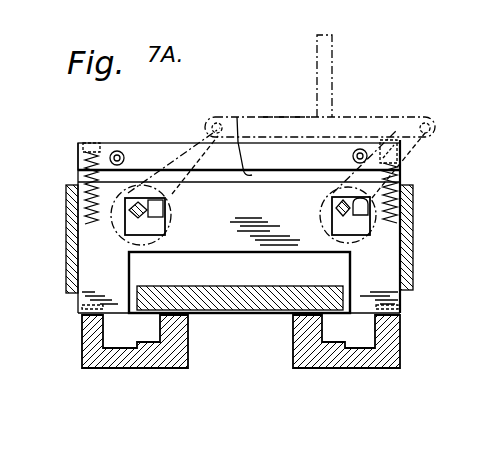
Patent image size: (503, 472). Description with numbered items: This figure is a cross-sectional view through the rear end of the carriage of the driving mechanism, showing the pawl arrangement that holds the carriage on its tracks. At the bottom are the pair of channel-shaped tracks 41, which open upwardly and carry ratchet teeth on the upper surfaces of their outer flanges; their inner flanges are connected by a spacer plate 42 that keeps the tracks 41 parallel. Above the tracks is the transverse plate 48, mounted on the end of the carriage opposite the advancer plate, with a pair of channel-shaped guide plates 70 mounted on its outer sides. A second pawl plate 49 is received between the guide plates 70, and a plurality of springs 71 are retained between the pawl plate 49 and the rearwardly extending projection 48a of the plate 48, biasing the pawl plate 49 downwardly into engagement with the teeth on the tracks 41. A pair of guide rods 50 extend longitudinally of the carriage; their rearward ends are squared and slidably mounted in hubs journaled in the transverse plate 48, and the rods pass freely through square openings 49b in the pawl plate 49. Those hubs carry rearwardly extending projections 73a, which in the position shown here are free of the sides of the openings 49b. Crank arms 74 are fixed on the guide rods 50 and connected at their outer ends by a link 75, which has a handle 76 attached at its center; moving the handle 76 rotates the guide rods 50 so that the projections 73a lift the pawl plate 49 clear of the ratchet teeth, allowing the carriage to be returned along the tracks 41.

The tracks 41 is at (101, 366).
The spacer plate 42 is at (218, 303).
The transverse plate 48 is at (163, 153).
The projection 48a is at (320, 115).
The pawl plate 49 is at (238, 243).
The openings 49b is at (165, 229).
The guide rods 50 is at (120, 218).
The guide plates 70 is at (67, 243).
The springs 71 is at (80, 173).
The projections 73a is at (165, 206).
The crank arms 74 is at (196, 138).
The link 75 is at (283, 122).
The handle 76 is at (334, 70).